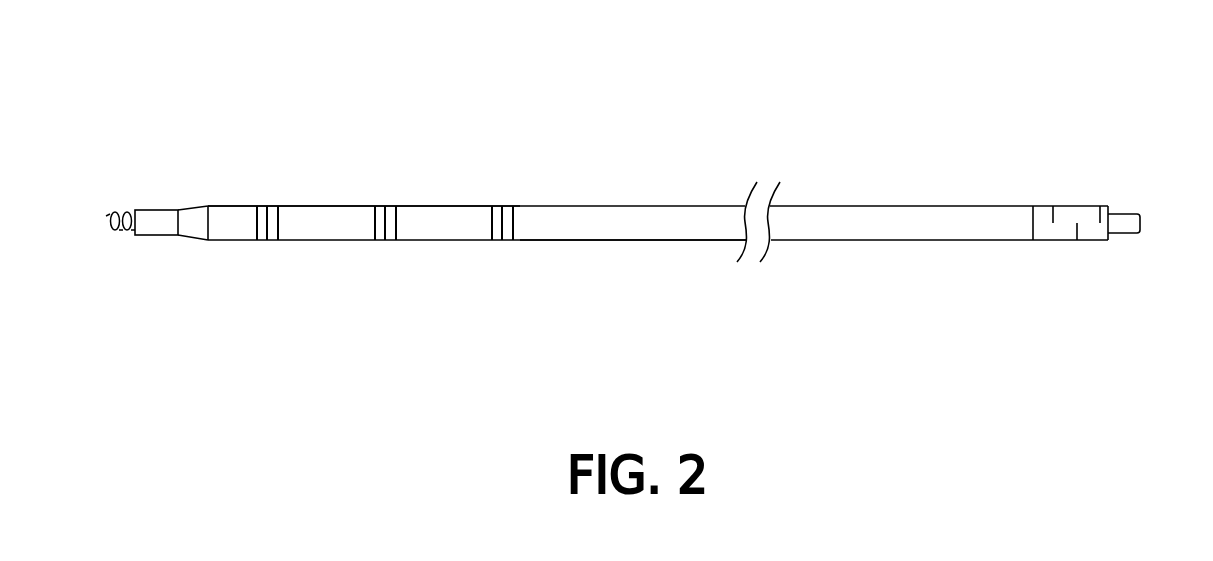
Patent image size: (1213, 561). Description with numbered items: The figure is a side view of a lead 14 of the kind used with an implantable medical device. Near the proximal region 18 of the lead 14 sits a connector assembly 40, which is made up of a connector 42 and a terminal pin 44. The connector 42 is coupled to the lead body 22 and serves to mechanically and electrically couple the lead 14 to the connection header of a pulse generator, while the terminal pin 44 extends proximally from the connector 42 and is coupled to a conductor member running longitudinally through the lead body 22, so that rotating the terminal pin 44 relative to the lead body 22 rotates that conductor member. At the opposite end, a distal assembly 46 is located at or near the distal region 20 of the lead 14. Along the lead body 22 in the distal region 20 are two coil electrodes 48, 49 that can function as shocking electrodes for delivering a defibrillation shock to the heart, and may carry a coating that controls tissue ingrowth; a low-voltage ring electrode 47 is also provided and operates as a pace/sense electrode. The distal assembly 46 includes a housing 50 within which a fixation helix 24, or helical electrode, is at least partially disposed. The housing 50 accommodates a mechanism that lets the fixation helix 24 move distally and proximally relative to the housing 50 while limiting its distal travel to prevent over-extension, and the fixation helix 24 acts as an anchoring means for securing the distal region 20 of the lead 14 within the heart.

The lead 14 is at (585, 97).
The proximal region 18 is at (933, 138).
The distal region 20 is at (268, 272).
The lead body 22 is at (685, 240).
The fixation helix 24 is at (110, 220).
The connector assembly 40 is at (1083, 248).
The connector 42 is at (1070, 206).
The terminal pin 44 is at (1120, 214).
The distal assembly 46 is at (160, 168).
The electrode 47 is at (192, 207).
The coil electrode 48 is at (298, 212).
The coil electrode 49 is at (425, 213).
The housing 50 is at (155, 235).